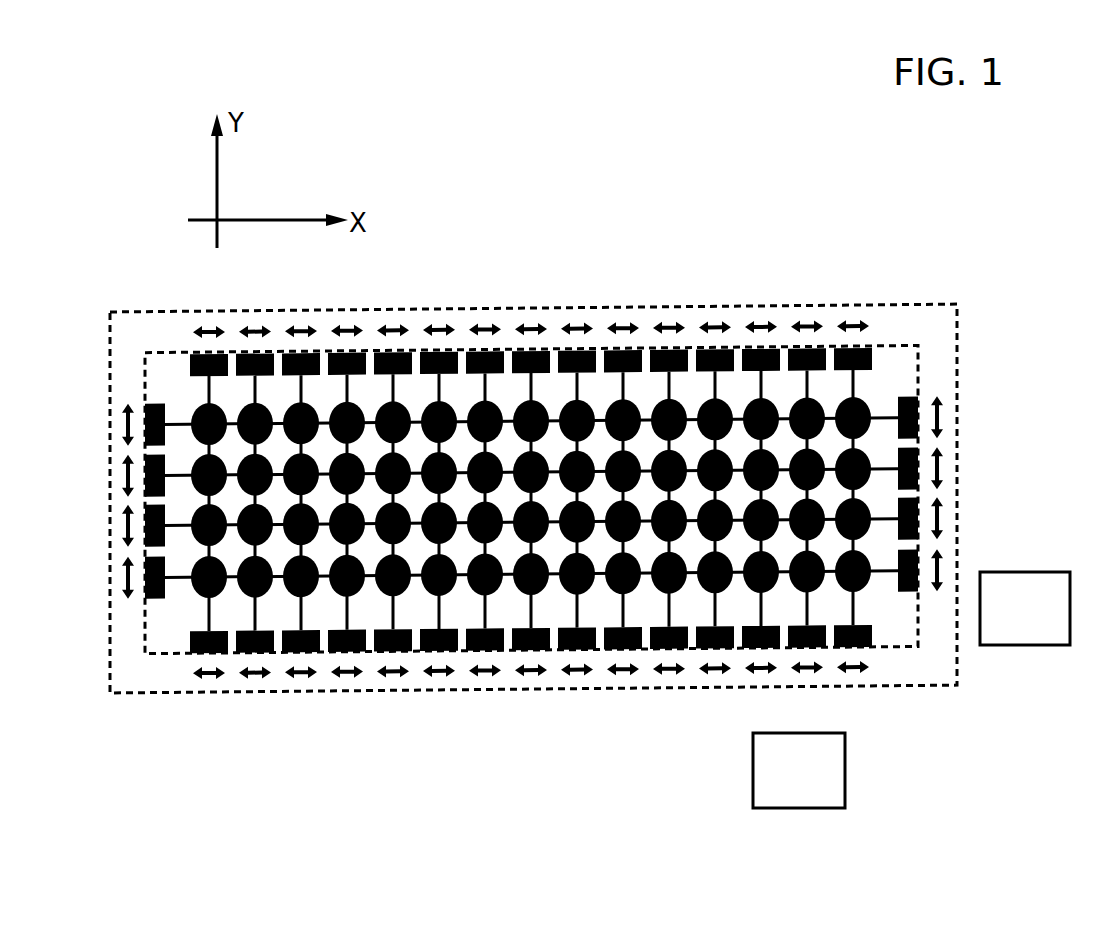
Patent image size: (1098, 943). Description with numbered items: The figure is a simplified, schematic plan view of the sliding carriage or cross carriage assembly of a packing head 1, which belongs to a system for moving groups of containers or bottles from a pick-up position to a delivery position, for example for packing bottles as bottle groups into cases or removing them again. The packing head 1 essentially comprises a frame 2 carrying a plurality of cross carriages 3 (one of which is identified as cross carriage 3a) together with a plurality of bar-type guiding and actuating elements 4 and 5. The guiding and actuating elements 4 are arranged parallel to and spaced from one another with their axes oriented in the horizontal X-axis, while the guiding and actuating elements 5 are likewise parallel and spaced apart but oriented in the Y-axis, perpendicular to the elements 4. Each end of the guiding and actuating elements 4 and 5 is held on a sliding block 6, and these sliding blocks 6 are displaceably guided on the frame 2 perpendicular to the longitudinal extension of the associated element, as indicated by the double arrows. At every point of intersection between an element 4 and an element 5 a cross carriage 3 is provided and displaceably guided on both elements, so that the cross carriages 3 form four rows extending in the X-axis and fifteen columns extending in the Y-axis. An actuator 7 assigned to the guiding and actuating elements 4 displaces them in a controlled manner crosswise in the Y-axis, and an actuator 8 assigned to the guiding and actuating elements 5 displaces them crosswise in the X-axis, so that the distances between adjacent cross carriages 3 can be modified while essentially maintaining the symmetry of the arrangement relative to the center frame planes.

The packing head 1 is at (588, 237).
The frame 2 is at (962, 333).
The cross carriage 3 is at (531, 508).
The circular electrode / nozzle element 3a is at (493, 403).
The guiding and actuating elements 4 is at (878, 417).
The guiding and actuating elements 5 is at (626, 392).
The sliding blocks 6 is at (312, 346).
The actuator 7 is at (967, 607).
The actuator 8 is at (842, 640).